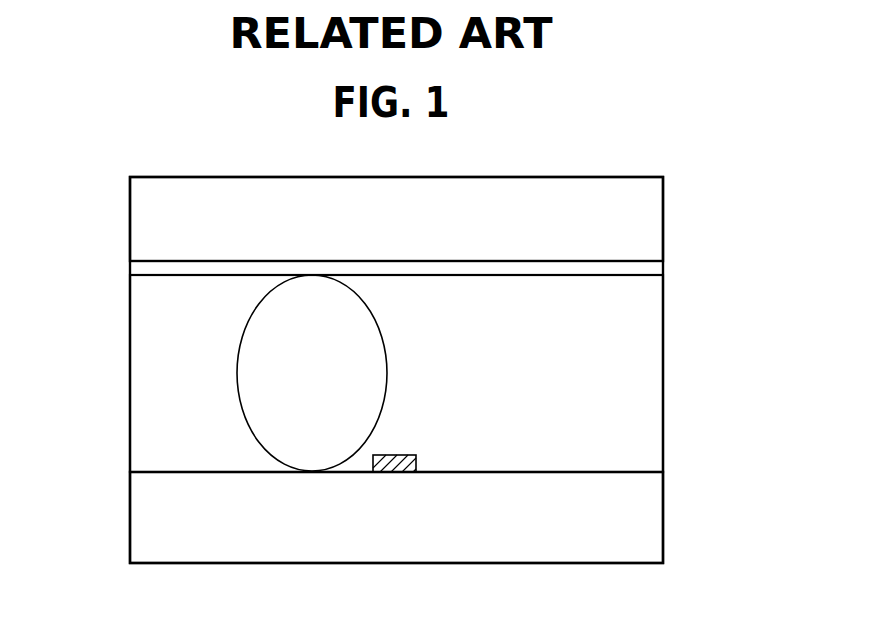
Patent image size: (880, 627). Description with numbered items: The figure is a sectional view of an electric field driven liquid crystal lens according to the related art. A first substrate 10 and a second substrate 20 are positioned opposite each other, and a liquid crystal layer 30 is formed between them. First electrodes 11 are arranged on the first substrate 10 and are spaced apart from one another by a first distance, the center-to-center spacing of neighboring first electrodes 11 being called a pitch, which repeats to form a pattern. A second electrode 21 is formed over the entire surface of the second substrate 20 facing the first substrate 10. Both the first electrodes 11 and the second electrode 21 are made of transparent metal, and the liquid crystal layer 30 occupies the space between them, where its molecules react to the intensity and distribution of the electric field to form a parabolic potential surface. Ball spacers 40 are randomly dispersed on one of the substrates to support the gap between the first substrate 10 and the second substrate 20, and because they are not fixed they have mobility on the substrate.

The first substrate 10 is at (655, 524).
The first electrode 11 is at (395, 465).
The second substrate 20 is at (655, 221).
The second electrode 21 is at (655, 268).
The liquid crystal layer 30 is at (655, 373).
The ball spacer 40 is at (247, 377).